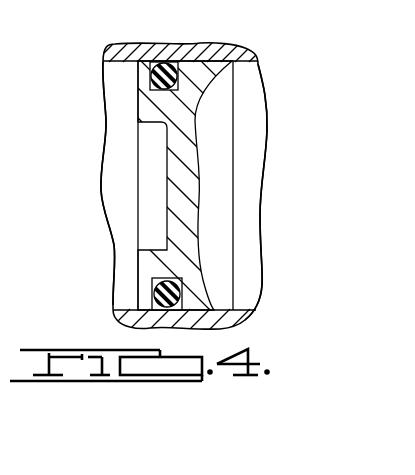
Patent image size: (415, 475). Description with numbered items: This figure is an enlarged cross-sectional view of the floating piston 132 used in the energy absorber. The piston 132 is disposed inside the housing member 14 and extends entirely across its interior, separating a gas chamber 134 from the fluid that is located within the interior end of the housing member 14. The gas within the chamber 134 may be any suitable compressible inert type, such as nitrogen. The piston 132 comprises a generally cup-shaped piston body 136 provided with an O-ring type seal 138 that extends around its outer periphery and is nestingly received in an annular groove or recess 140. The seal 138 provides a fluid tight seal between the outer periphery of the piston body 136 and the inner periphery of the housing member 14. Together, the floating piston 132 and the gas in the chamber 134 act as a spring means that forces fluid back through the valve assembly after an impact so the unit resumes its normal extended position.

The housing member 14 is at (246, 50).
The floating piston 132 is at (244, 107).
The gas chamber 134 is at (117, 202).
The piston body 136 is at (190, 176).
The O-ring type seal 138 is at (166, 62).
The annular groove 140 is at (137, 83).